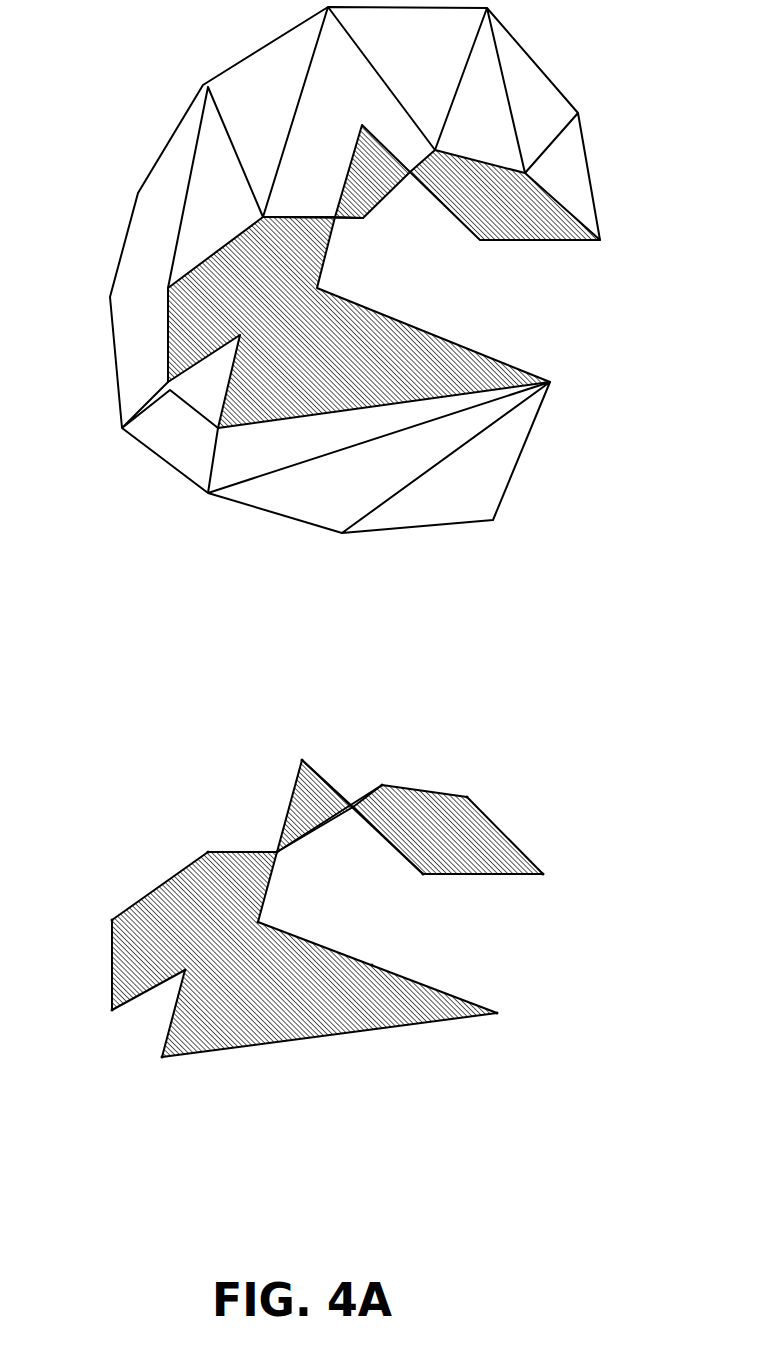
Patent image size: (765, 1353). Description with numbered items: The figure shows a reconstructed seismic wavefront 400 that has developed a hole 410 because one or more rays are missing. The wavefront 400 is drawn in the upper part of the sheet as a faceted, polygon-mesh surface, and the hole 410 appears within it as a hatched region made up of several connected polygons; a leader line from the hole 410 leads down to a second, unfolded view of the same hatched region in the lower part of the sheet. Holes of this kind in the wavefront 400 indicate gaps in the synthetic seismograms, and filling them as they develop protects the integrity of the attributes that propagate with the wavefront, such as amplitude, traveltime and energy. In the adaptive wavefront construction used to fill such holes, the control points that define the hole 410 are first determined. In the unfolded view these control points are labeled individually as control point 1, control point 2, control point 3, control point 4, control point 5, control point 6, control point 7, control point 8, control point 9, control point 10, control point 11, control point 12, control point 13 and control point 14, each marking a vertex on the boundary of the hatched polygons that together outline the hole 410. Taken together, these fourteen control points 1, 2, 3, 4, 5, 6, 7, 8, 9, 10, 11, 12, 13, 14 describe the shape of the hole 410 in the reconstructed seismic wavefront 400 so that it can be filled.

The reconstructed seismic wavefront 400 is at (238, 62).
The hole 410 is at (307, 352).
The control point 1 is at (92, 920).
The control point 2 is at (210, 835).
The control point 3 is at (296, 863).
The control point 4 is at (382, 783).
The control point 5 is at (474, 810).
The control point 6 is at (553, 890).
The control point 7 is at (421, 908).
The control point 8 is at (301, 743).
The control point 9 is at (280, 926).
The control point 10 is at (372, 966).
The control point 11 is at (522, 1020).
The control point 12 is at (159, 1073).
The control point 13 is at (210, 980).
The control point 14 is at (107, 1020).